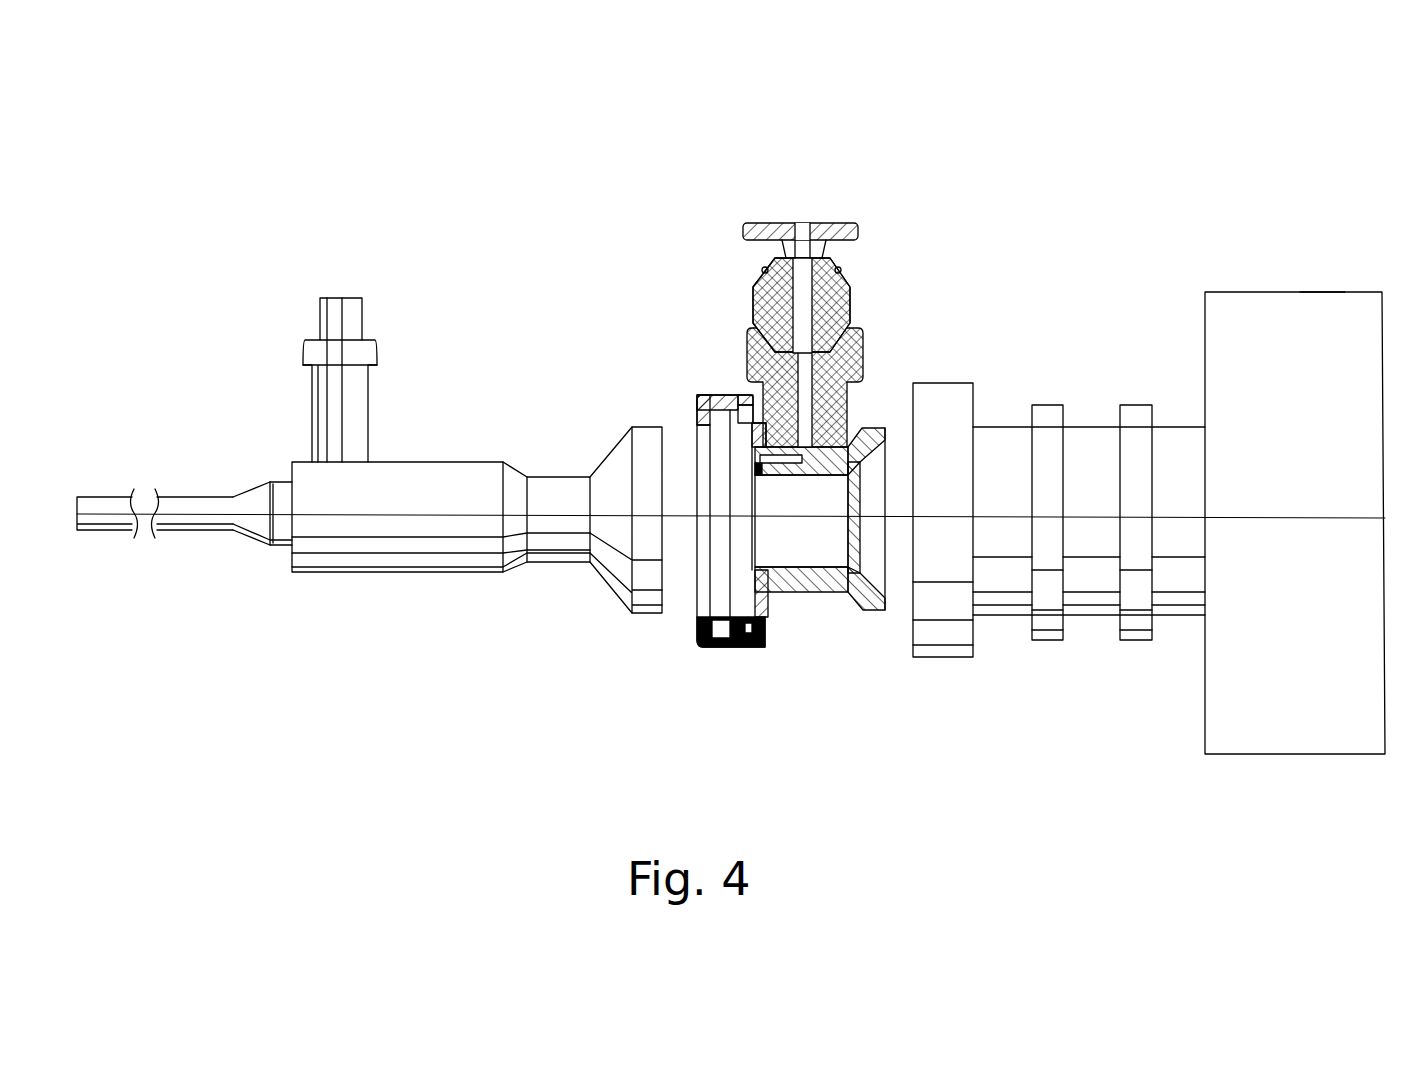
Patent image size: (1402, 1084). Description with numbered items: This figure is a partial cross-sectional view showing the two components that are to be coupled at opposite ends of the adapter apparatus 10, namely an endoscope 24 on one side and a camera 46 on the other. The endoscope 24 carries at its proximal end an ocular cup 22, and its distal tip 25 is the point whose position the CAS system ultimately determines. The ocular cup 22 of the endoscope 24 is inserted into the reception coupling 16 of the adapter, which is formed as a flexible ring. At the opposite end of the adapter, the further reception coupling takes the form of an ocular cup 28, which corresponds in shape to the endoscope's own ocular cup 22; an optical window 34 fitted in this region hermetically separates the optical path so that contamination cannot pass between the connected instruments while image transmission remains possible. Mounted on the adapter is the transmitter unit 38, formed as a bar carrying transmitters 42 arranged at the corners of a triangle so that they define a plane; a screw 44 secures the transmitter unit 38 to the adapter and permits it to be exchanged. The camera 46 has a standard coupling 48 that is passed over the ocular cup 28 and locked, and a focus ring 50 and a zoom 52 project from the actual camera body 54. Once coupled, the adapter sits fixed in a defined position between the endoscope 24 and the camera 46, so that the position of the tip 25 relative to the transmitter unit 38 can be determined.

The apparatus 10 is at (827, 178).
The reception coupling 16 is at (703, 394).
The ocular cup 22 is at (645, 603).
The endoscope 24 is at (470, 360).
The tip 25 is at (75, 517).
The ocular cup 28 is at (876, 604).
The optical window 34 is at (848, 520).
The transmitter unit 38 is at (837, 300).
The transmitters 42 is at (765, 268).
The screw 44 is at (845, 224).
The camera 46 is at (1241, 243).
The coupling 48 is at (943, 403).
The focus ring 50 is at (1047, 410).
The zoom 52 is at (1135, 410).
The camera body 54 is at (1322, 318).